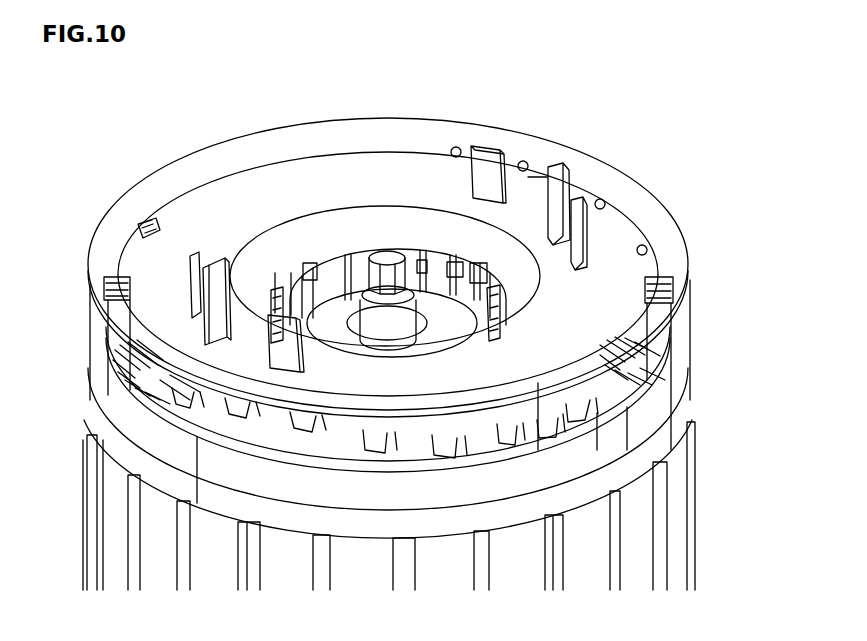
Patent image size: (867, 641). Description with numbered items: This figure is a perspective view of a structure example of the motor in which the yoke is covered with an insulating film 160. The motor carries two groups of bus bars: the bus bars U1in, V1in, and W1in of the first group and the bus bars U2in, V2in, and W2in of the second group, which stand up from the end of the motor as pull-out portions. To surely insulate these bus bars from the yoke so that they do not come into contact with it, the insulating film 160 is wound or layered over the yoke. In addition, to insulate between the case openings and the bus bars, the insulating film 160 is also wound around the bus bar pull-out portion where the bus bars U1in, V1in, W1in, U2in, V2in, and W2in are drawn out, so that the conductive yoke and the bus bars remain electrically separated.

The insulating film 160 is at (660, 200).
The bus bar U1in is at (142, 229).
The bus bar V1in is at (213, 280).
The bus bar W1in is at (283, 277).
The bus bar U2in is at (580, 215).
The bus bar V2in is at (560, 173).
The bus bar W2in is at (494, 153).